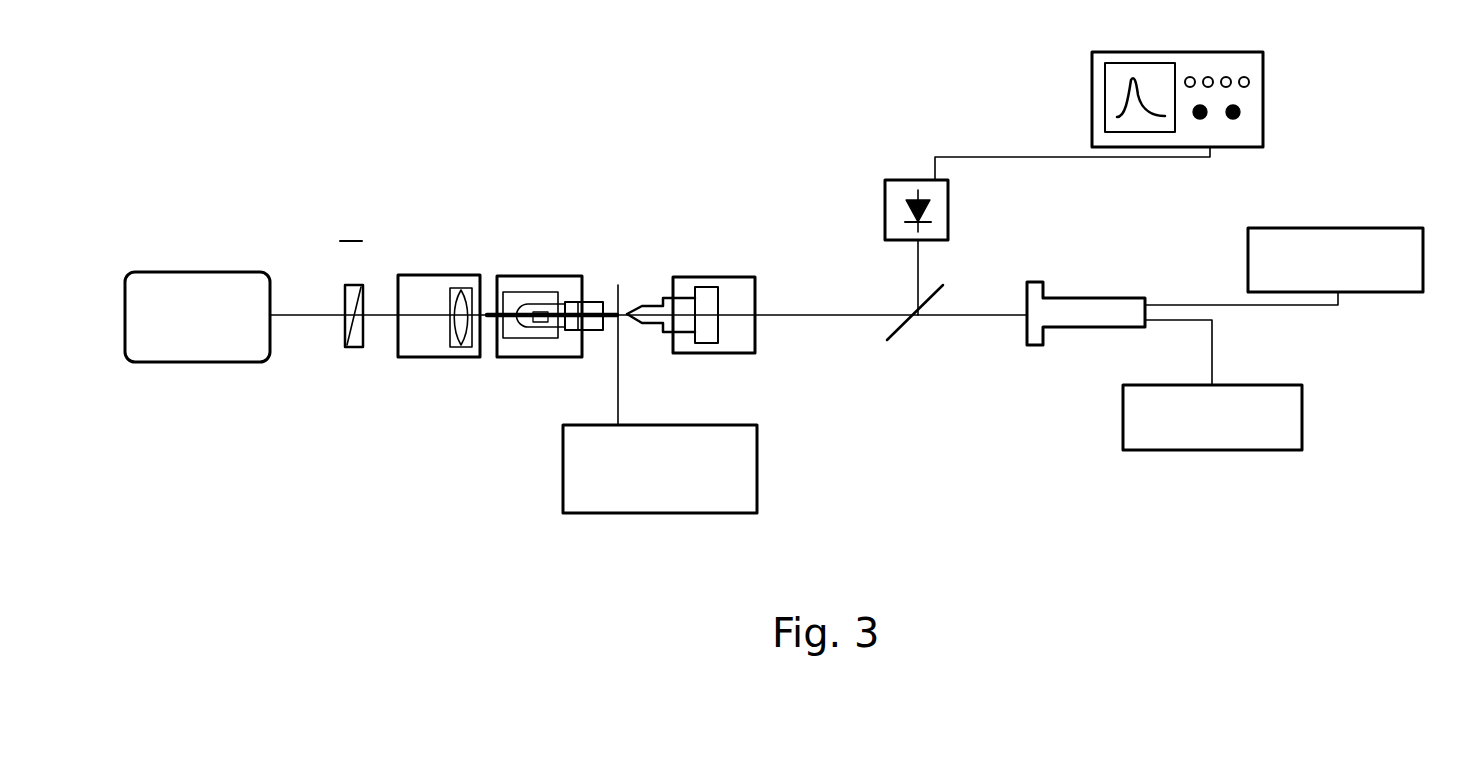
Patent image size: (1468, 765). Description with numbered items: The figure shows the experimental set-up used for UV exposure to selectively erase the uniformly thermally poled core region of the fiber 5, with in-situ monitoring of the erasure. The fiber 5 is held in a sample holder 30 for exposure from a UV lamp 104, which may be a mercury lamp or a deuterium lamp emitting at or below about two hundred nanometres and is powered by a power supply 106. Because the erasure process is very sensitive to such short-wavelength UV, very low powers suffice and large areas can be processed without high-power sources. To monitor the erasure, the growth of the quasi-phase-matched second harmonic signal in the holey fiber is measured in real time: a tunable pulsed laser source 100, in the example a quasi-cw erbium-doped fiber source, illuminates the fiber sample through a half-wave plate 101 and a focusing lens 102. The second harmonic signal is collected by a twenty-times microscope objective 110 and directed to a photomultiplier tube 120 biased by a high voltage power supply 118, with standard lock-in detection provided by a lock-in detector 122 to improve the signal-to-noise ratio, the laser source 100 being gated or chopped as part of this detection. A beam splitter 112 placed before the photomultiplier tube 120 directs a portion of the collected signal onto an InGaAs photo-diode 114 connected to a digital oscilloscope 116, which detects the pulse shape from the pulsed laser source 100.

The tunable pulsed laser source 100 is at (223, 272).
The half-wave plate 101 is at (358, 347).
The focusing lens 102 is at (455, 290).
The sample holder 30 is at (527, 357).
The fiber 5 is at (616, 285).
The UV lamp 104 is at (590, 330).
The power supply 106 is at (695, 513).
The microscope objective 110 is at (682, 298).
The beam splitter 112 is at (903, 326).
The InGaAs photo-diode 114 is at (948, 227).
The digital oscilloscope 116 is at (1265, 95).
The high voltage power supply 118 is at (1312, 228).
The photomultiplier tube 120 is at (1080, 327).
The lock-in detector 122 is at (1185, 450).